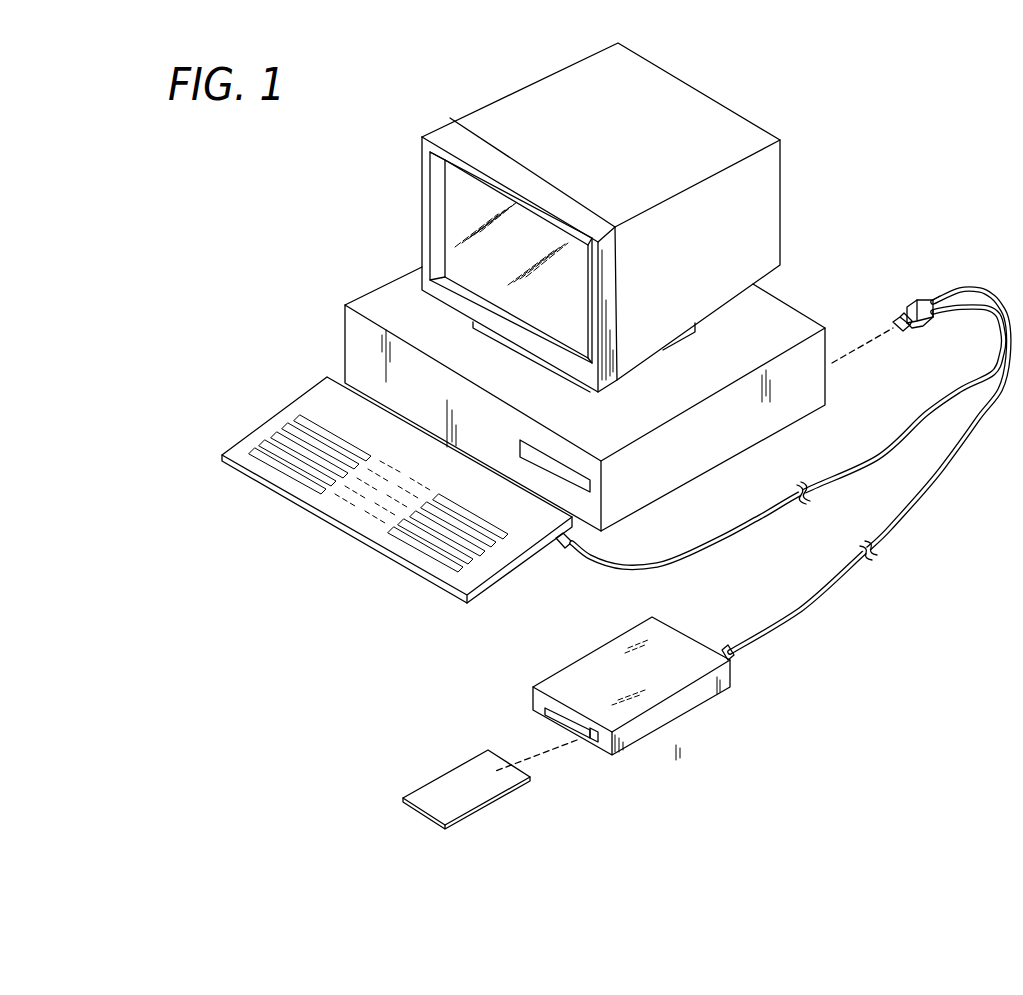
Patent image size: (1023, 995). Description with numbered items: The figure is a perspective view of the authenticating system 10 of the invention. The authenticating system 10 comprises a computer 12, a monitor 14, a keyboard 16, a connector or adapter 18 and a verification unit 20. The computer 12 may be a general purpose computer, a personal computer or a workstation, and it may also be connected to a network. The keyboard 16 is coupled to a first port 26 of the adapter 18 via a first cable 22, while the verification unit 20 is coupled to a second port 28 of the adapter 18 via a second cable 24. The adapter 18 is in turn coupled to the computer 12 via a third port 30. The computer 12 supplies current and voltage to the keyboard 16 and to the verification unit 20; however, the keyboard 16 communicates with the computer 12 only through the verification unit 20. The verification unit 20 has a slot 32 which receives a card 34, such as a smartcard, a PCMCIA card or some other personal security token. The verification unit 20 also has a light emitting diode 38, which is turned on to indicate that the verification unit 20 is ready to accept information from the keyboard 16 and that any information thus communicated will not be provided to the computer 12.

The authenticating system 10 is at (933, 156).
The computer 12 is at (772, 305).
The monitor 14 is at (730, 120).
The keyboard 16 is at (435, 582).
The adapter 18 is at (903, 308).
The verification unit 20 is at (688, 702).
The first cable 22 is at (728, 533).
The second cable 24 is at (800, 610).
The first port 26 is at (920, 300).
The second port 28 is at (933, 317).
The third port 30 is at (897, 330).
The slot 32 is at (583, 737).
The card 34 is at (493, 800).
The light emitting diode 38 is at (593, 740).